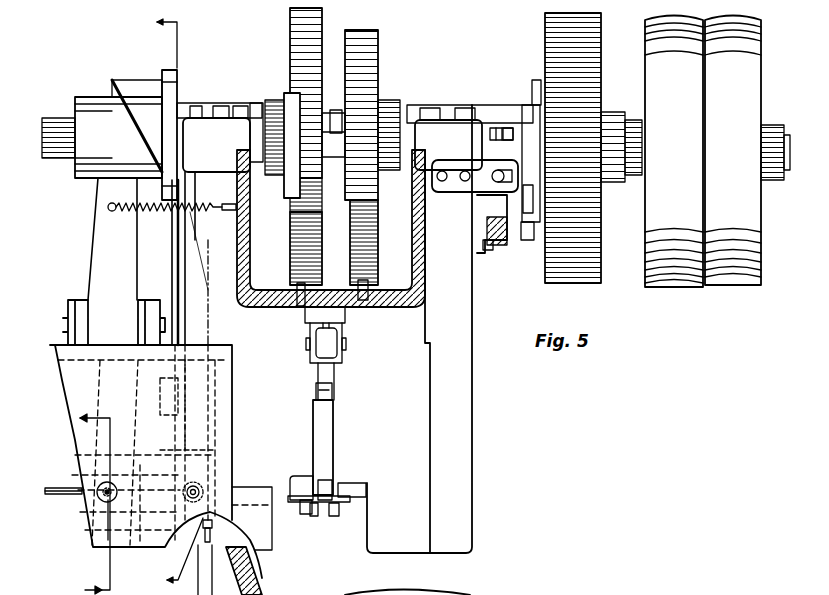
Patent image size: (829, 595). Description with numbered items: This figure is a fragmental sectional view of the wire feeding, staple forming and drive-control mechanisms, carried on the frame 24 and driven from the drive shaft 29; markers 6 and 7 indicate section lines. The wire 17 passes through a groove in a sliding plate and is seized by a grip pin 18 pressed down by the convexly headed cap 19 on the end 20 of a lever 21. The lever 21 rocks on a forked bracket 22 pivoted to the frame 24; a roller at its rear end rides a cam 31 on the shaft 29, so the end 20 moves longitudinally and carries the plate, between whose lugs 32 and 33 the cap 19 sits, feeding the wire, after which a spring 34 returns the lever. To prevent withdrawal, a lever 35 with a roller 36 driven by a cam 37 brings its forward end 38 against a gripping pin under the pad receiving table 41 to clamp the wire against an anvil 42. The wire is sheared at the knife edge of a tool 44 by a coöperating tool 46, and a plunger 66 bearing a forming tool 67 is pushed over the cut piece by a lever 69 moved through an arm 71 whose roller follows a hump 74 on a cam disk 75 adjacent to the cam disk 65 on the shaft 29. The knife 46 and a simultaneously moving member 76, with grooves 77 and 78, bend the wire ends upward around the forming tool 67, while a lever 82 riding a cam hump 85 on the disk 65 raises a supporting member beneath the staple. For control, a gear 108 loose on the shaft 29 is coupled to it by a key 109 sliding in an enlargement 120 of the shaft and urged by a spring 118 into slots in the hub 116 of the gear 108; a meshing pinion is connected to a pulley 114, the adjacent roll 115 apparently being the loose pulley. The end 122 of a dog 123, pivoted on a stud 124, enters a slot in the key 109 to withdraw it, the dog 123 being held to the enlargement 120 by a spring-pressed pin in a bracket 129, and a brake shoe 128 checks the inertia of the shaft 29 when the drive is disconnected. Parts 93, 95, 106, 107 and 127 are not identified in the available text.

The section line 6 is at (167, 301).
The section line 7 is at (84, 502).
The wire 17 is at (60, 495).
The grip pin 18 is at (108, 522).
The cap 19 is at (105, 495).
The end of lever 20 is at (100, 450).
The lever 21 is at (93, 364).
The forked bracket 22 is at (68, 312).
The frame 24 is at (453, 317).
The drive shaft 29 is at (790, 167).
The cam 31 is at (141, 85).
The downwardly projecting lug 32 is at (97, 489).
The downwardly projecting lug 33 is at (140, 505).
The spring 34 is at (176, 212).
The lever 35 is at (180, 272).
The roller 36 is at (175, 125).
The cam 37 is at (178, 74).
The forward end 38 is at (203, 492).
The pad receiving table 41 is at (403, 366).
The anvil 42 is at (197, 487).
The tool 44 is at (308, 502).
The coöperating tool 46 is at (308, 480).
The cam disk 65 is at (380, 46).
The plunger 66 is at (323, 435).
The forming tool 67 is at (327, 484).
The lever 69 is at (340, 340).
The arm 71 is at (301, 307).
The hump 74 is at (287, 108).
The cam disk 75 is at (291, 24).
The coöperating member 76 is at (355, 481).
The groove 77 is at (316, 512).
The groove 78 is at (333, 514).
The lever 82 is at (370, 290).
The cam hump 85 is at (366, 253).
The housing 93 is at (262, 309).
The cam 95 is at (343, 594).
The gear 106 is at (298, 222).
The gear 107 is at (294, 182).
The gear 108 is at (598, 34).
The key 109 is at (508, 127).
The pulley 114 is at (656, 288).
The roll 115 is at (717, 290).
The hub 116 is at (607, 184).
The spring 118 is at (493, 127).
The enlargement 120 is at (488, 118).
The end of dog 122 is at (517, 143).
The dog 123 is at (498, 222).
The stud 124 is at (525, 242).
The pawl 127 is at (512, 200).
The brake shoe 128 is at (490, 248).
The bracket 129 is at (534, 90).